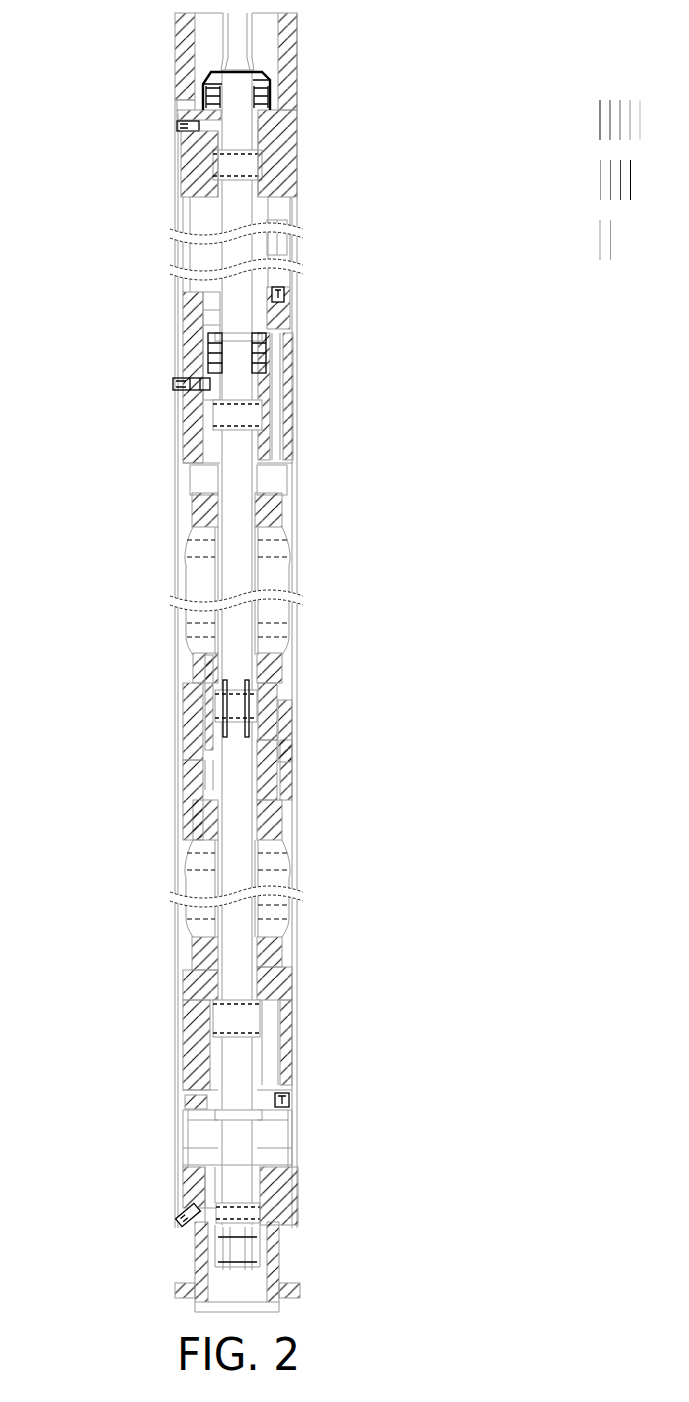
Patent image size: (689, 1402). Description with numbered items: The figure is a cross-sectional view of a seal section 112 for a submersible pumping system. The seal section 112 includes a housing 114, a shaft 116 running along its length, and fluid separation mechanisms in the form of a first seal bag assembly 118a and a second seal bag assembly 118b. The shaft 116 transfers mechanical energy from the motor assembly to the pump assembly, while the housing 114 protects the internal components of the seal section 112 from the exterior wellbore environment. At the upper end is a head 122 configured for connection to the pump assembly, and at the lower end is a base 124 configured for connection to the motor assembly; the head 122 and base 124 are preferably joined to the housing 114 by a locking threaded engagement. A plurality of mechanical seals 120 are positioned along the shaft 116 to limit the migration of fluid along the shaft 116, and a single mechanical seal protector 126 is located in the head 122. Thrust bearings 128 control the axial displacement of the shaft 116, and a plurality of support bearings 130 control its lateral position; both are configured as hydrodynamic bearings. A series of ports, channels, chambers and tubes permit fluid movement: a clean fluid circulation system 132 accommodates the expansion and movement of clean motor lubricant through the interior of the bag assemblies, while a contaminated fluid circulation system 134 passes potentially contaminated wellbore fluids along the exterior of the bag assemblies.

The seal section 112 is at (85, 284).
The housing 114 is at (297, 497).
The shaft 116 is at (250, 47).
The first seal bag assembly 118a is at (140, 595).
The second seal bag assembly 118b is at (140, 902).
The mechanical seals 120 is at (268, 110).
The head 122 is at (175, 45).
The base 124 is at (185, 1292).
The mechanical seal protector 126 is at (262, 77).
The thrust bearings 128 is at (272, 1148).
The support bearings 130 is at (218, 418).
The clean fluid circulation system 132 is at (205, 728).
The contaminated fluid circulation system 134 is at (277, 423).